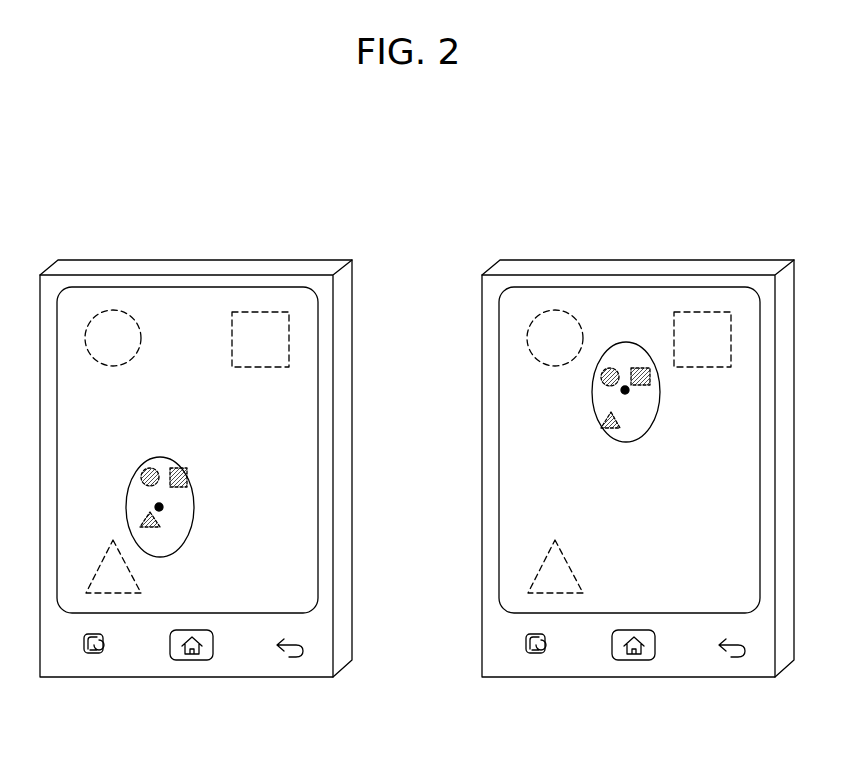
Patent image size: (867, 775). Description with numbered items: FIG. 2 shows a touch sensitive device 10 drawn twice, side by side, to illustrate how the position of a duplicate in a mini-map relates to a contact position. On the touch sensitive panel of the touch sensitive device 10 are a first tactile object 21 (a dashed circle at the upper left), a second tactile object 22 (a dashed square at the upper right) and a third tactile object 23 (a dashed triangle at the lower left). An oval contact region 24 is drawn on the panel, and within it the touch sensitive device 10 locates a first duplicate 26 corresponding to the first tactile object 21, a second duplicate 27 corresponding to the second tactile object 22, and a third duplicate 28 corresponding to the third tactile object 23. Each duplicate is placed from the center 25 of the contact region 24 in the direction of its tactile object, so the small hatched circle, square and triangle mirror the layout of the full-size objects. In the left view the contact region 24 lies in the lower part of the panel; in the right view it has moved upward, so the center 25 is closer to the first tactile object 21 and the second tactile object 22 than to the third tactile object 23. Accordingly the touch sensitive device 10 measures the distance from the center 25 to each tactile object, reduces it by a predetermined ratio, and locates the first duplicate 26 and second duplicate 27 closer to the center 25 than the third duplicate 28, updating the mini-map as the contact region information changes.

The touch sensitive device 10 is at (222, 272).
The first tactile object 21 is at (113, 322).
The second tactile object 22 is at (260, 322).
The third tactile object 23 is at (103, 571).
The contact region 24 is at (195, 506).
The center of the contact region 25 is at (162, 508).
The first duplicate 26 is at (141, 475).
The second duplicate 27 is at (188, 470).
The third duplicate 28 is at (143, 522).